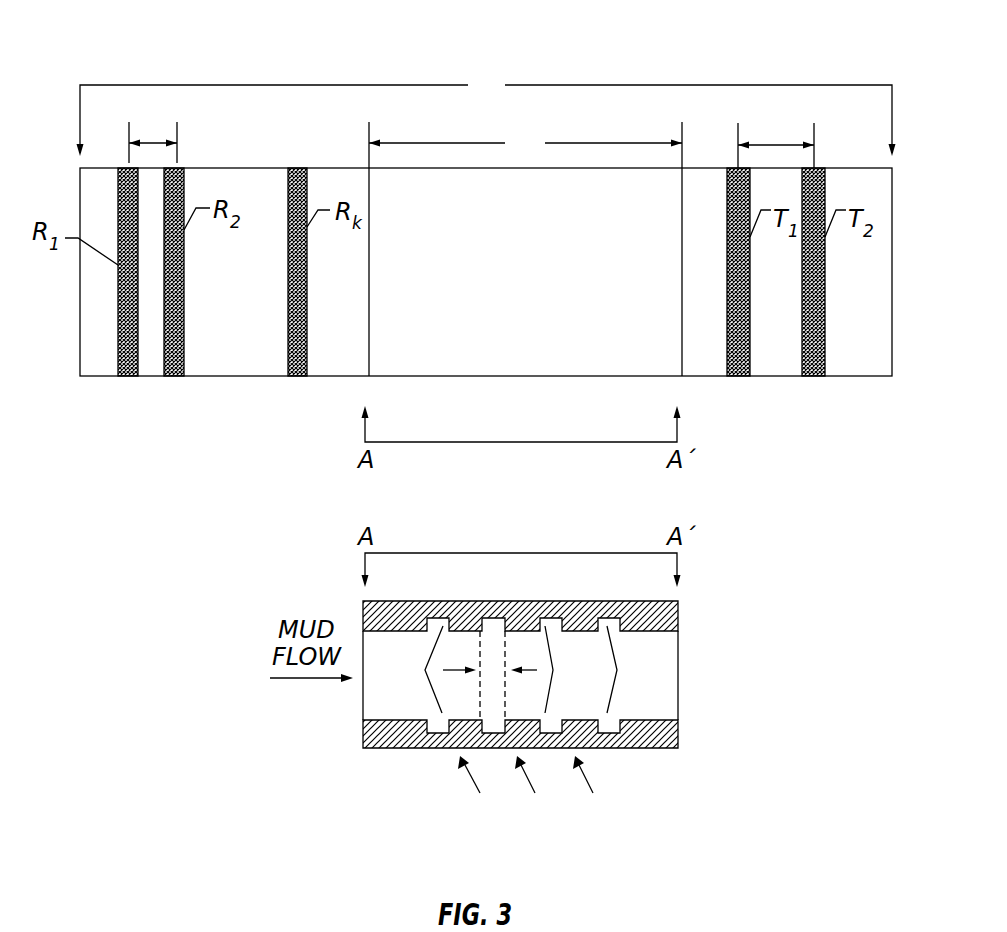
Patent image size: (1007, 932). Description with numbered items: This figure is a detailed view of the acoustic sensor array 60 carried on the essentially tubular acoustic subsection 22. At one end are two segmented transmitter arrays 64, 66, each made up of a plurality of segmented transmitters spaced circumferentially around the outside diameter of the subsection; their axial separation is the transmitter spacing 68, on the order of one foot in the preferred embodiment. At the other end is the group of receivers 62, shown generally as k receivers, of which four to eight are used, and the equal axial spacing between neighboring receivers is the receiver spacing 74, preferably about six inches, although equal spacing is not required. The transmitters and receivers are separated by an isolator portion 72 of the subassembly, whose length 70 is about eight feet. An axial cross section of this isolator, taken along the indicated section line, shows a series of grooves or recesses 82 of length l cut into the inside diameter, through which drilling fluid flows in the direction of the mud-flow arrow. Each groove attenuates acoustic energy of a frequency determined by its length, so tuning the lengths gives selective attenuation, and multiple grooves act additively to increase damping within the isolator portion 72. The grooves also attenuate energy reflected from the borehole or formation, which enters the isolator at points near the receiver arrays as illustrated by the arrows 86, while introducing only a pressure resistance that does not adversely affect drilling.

The acoustic sensor array 60 is at (138, 51).
The acoustic subsection 22 is at (486, 114).
The receiver spacing 74 is at (148, 142).
The isolator portion length 70 is at (525, 144).
The transmitter array spacing 68 is at (773, 143).
The receivers 62 is at (292, 374).
The first segmented transmitter array 64 is at (738, 378).
The second segmented transmitter array 66 is at (818, 378).
The isolator portion 72 is at (540, 287).
The grooves or recesses 82 is at (630, 670).
The reflected energy entry arrows 86 is at (593, 794).